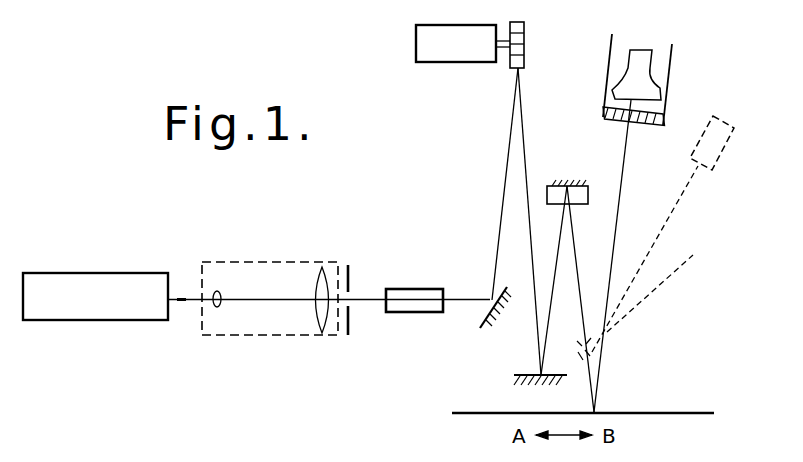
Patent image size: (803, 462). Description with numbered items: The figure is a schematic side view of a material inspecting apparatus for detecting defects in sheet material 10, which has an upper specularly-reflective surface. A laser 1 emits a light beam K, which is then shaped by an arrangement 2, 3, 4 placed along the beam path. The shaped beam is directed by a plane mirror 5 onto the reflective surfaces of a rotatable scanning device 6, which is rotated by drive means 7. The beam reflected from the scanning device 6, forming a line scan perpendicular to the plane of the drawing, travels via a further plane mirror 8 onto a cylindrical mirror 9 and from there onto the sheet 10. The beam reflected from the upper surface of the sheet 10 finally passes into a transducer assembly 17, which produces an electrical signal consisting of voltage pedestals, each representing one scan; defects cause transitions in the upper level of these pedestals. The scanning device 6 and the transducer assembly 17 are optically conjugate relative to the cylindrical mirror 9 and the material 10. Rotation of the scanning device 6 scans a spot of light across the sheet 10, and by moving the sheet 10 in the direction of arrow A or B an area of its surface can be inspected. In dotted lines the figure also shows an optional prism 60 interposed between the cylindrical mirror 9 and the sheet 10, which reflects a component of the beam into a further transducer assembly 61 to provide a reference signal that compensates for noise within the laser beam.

The laser 1 is at (76, 288).
The light beam K is at (183, 302).
The beam shaping arrangement 2 is at (287, 264).
The beam shaping arrangement 3 is at (353, 265).
The beam shaping arrangement 4 is at (408, 313).
The plane mirror 5 is at (489, 312).
The rotatable scanning device 6 is at (524, 55).
The drive means 7 is at (444, 50).
The further plane mirror 8 is at (514, 377).
The cylindrical mirror 9 is at (557, 193).
The sheet material 10 is at (670, 413).
The transducer assembly 17 is at (676, 52).
The prism 60 is at (605, 352).
The further transducer assembly 61 is at (712, 172).